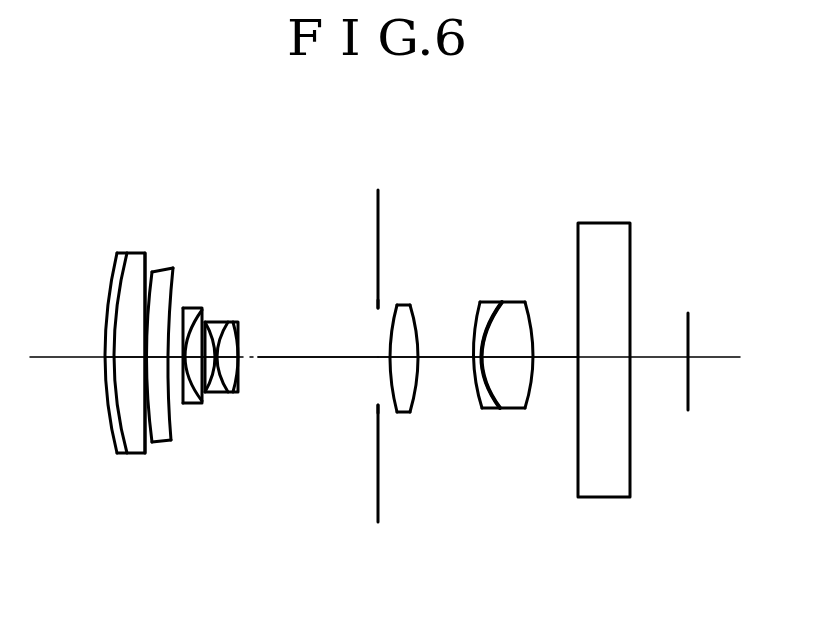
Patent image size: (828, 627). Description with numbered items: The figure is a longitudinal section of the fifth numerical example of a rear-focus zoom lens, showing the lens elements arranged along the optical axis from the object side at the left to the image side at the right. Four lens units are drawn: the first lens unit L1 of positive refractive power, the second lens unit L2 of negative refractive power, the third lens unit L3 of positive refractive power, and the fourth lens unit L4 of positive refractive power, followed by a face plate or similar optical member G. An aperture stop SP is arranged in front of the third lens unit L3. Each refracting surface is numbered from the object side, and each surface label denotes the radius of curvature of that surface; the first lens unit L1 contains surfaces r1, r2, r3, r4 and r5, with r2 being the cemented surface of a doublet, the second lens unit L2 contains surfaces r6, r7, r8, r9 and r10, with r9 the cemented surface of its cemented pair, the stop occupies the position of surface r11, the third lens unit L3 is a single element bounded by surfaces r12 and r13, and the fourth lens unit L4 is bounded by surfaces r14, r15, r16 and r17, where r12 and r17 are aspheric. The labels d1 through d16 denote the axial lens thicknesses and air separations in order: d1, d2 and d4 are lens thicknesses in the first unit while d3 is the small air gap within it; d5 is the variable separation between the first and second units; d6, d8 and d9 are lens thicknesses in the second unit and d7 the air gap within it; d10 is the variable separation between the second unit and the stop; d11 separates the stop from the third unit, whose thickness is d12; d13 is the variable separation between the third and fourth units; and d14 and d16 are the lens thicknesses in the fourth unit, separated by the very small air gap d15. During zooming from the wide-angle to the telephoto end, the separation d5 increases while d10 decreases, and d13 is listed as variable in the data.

The first lens unit L1 is at (178, 107).
The second lens unit L2 is at (283, 143).
The third lens unit L3 is at (458, 178).
The fourth lens unit L4 is at (575, 147).
The aperture stop SP is at (378, 242).
The face plate G is at (617, 222).
The first lens surface r1 is at (101, 300).
The second lens surface r2 is at (113, 282).
The third lens surface r3 is at (143, 272).
The fourth lens surface r4 is at (153, 276).
The fifth lens surface r5 is at (172, 270).
The sixth lens surface r6 is at (184, 307).
The seventh lens surface r7 is at (200, 310).
The eighth lens surface r8 is at (207, 322).
The ninth lens surface r9 is at (228, 322).
The tenth lens surface r10 is at (239, 330).
The stop surface r11 is at (347, 282).
The twelfth lens surface r12 is at (395, 303).
The thirteenth lens surface r13 is at (413, 303).
The fourteenth lens surface r14 is at (474, 330).
The fifteenth lens surface r15 is at (496, 302).
The sixteenth lens surface r16 is at (504, 303).
The seventeenth lens surface r17 is at (531, 312).
The first lens thickness d1 is at (108, 412).
The second lens thickness d2 is at (122, 445).
The third air separation d3 is at (149, 425).
The fourth lens thickness d4 is at (160, 445).
The fifth air separation d5 is at (177, 425).
The sixth lens thickness d6 is at (192, 410).
The seventh air separation d7 is at (210, 400).
The eighth lens thickness d8 is at (216, 395).
The ninth lens thickness d9 is at (235, 395).
The tenth air separation d10 is at (297, 360).
The eleventh air separation d11 is at (386, 415).
The twelfth lens thickness d12 is at (405, 414).
The thirteenth air separation d13 is at (440, 380).
The fourteenth lens thickness d14 is at (482, 412).
The fifteenth air separation d15 is at (495, 410).
The sixteenth lens thickness d16 is at (515, 410).